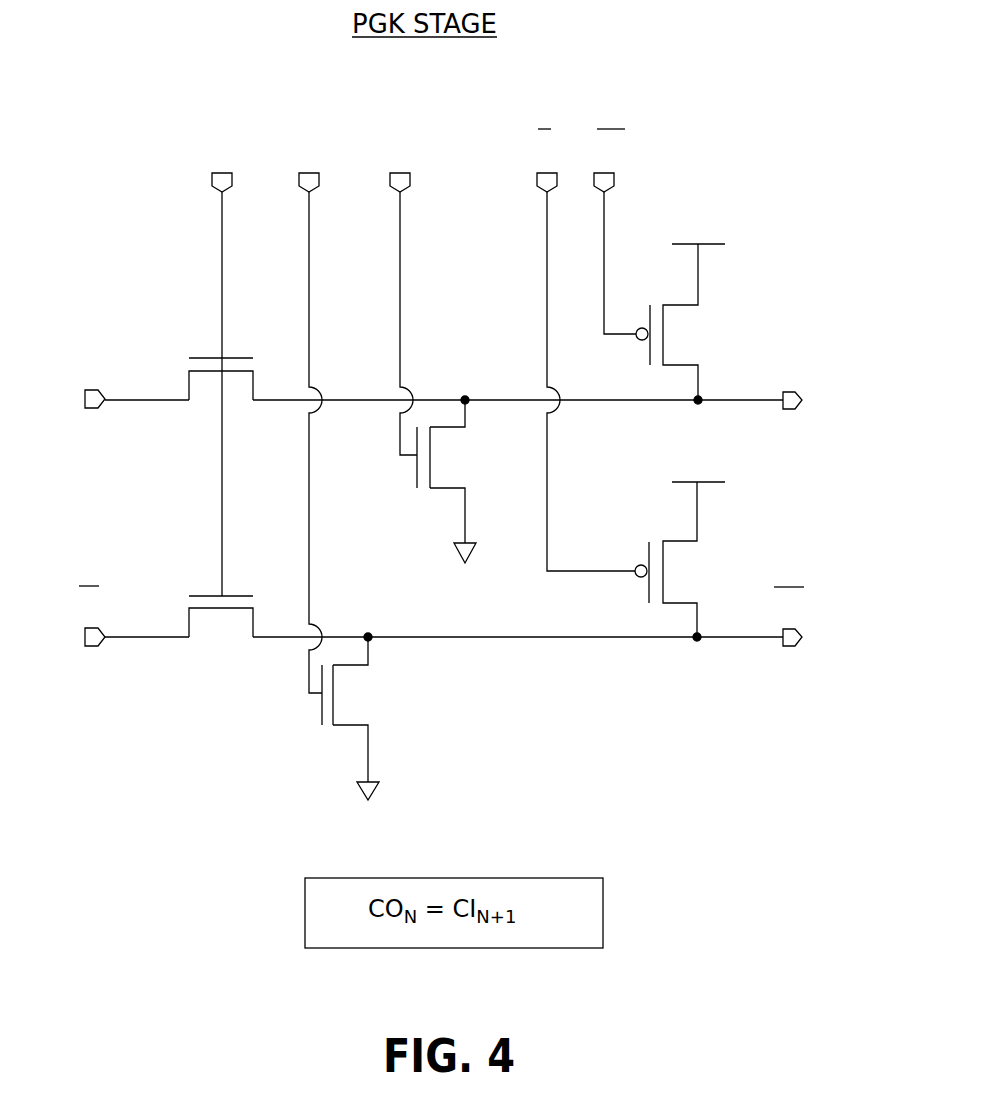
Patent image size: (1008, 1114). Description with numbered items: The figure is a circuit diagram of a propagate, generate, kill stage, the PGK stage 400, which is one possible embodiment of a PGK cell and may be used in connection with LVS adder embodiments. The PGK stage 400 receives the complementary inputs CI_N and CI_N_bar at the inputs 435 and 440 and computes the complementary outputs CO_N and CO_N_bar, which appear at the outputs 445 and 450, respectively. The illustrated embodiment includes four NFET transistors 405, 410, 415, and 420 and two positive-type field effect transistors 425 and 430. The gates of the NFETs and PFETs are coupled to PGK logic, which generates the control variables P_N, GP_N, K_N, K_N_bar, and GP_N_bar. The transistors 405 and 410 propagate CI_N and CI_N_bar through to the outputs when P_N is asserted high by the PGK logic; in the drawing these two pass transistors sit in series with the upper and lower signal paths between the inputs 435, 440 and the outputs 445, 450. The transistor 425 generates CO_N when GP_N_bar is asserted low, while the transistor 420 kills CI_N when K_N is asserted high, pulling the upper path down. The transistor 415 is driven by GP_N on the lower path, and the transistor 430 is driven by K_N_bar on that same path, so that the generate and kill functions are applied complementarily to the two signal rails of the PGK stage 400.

The PGK stage 400 is at (757, 98).
The NFET transistor 405 is at (202, 345).
The NFET transistor 410 is at (202, 582).
The NFET transistor 415 is at (317, 708).
The NFET transistor 420 is at (412, 473).
The PFET transistor 425 is at (698, 325).
The PFET transistor 430 is at (698, 562).
The input 435 is at (92, 410).
The input 440 is at (92, 648).
The output 445 is at (795, 410).
The output 450 is at (792, 648).